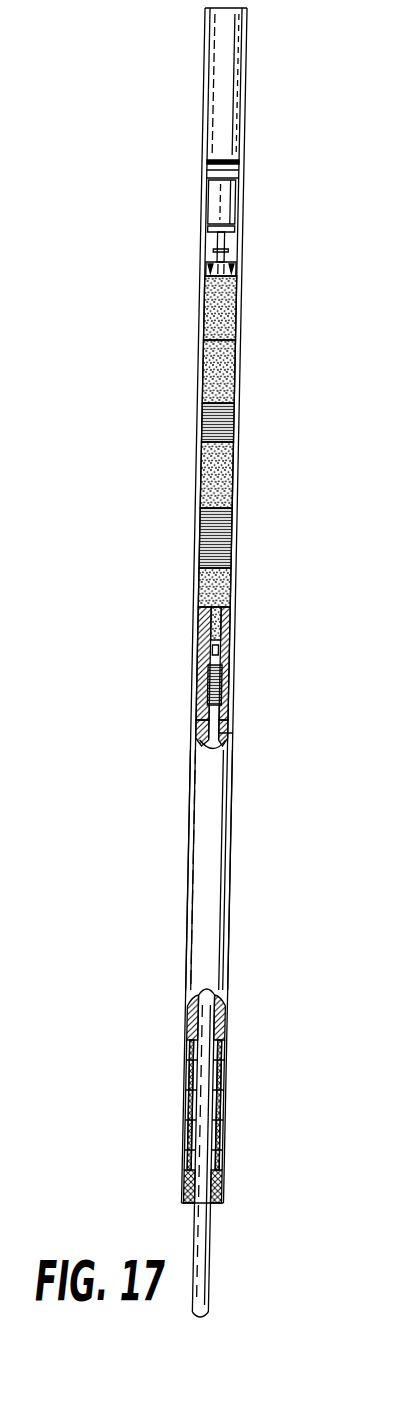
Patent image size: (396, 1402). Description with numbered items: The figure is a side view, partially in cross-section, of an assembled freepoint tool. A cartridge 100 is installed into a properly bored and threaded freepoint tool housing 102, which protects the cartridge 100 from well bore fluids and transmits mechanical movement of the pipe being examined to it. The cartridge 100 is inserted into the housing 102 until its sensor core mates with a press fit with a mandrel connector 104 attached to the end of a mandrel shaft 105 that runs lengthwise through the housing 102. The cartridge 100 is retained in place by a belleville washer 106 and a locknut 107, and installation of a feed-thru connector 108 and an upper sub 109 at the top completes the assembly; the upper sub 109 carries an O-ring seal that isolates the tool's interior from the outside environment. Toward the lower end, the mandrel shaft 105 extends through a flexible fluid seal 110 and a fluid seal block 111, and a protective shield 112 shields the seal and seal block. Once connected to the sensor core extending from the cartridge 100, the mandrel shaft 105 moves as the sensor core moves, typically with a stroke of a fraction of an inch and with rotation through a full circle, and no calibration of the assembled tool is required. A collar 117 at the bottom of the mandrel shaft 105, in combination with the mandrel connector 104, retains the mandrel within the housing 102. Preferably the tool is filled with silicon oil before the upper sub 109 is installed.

The cartridge 100 is at (237, 490).
The freepoint tool housing 102 is at (230, 898).
The mandrel connector 104 is at (226, 673).
The mandrel shaft 105 is at (201, 745).
The belleville washer 106 is at (241, 228).
The locknut 107 is at (207, 274).
The feed-thru connector 108 is at (227, 250).
The upper sub 109 is at (247, 66).
The flexible fluid seal 110 is at (224, 1124).
The fluid seal block 111 is at (223, 1193).
The protective shield 112 is at (227, 1063).
The collar 117 is at (184, 1097).